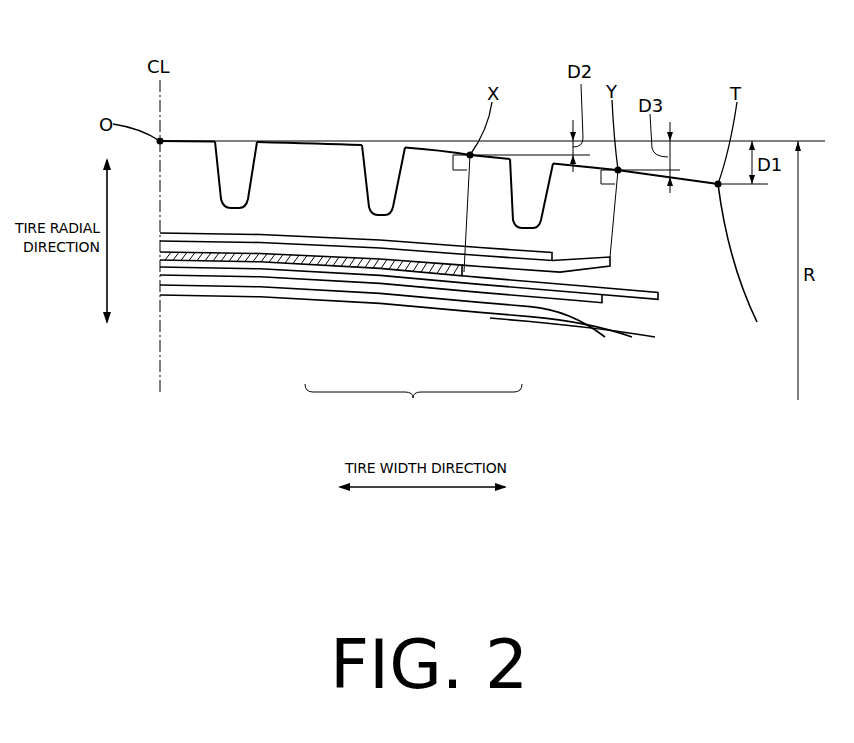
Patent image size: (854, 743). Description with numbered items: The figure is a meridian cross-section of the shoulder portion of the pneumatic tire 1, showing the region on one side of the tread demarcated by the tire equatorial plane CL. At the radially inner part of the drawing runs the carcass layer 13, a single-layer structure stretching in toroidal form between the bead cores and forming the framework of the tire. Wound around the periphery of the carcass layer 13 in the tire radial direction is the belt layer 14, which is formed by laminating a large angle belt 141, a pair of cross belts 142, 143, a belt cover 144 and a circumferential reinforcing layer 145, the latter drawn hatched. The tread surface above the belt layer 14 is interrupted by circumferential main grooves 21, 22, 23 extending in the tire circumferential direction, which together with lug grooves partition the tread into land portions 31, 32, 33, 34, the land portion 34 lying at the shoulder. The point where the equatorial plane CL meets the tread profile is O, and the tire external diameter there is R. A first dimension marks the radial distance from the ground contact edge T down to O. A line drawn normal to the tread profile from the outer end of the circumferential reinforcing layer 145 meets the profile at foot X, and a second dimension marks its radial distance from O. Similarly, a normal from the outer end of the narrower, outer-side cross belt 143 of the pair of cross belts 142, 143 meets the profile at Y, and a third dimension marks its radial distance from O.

The pneumatic tire 1 is at (666, 69).
The carcass layer 13 is at (555, 306).
The belt layer 14 is at (413, 401).
The large angle belt 141 is at (512, 295).
The cross belt 142 is at (470, 280).
The cross belt 143 is at (423, 256).
The belt cover 144 is at (380, 249).
The circumferential reinforcing layer 145 is at (343, 263).
The circumferential main groove 21 is at (235, 153).
The circumferential main groove 22 is at (383, 160).
The circumferential main groove 23 is at (532, 170).
The land portion 31 is at (173, 137).
The land portion 32 is at (335, 145).
The land portion 33 is at (450, 150).
The land portion 34 is at (688, 178).